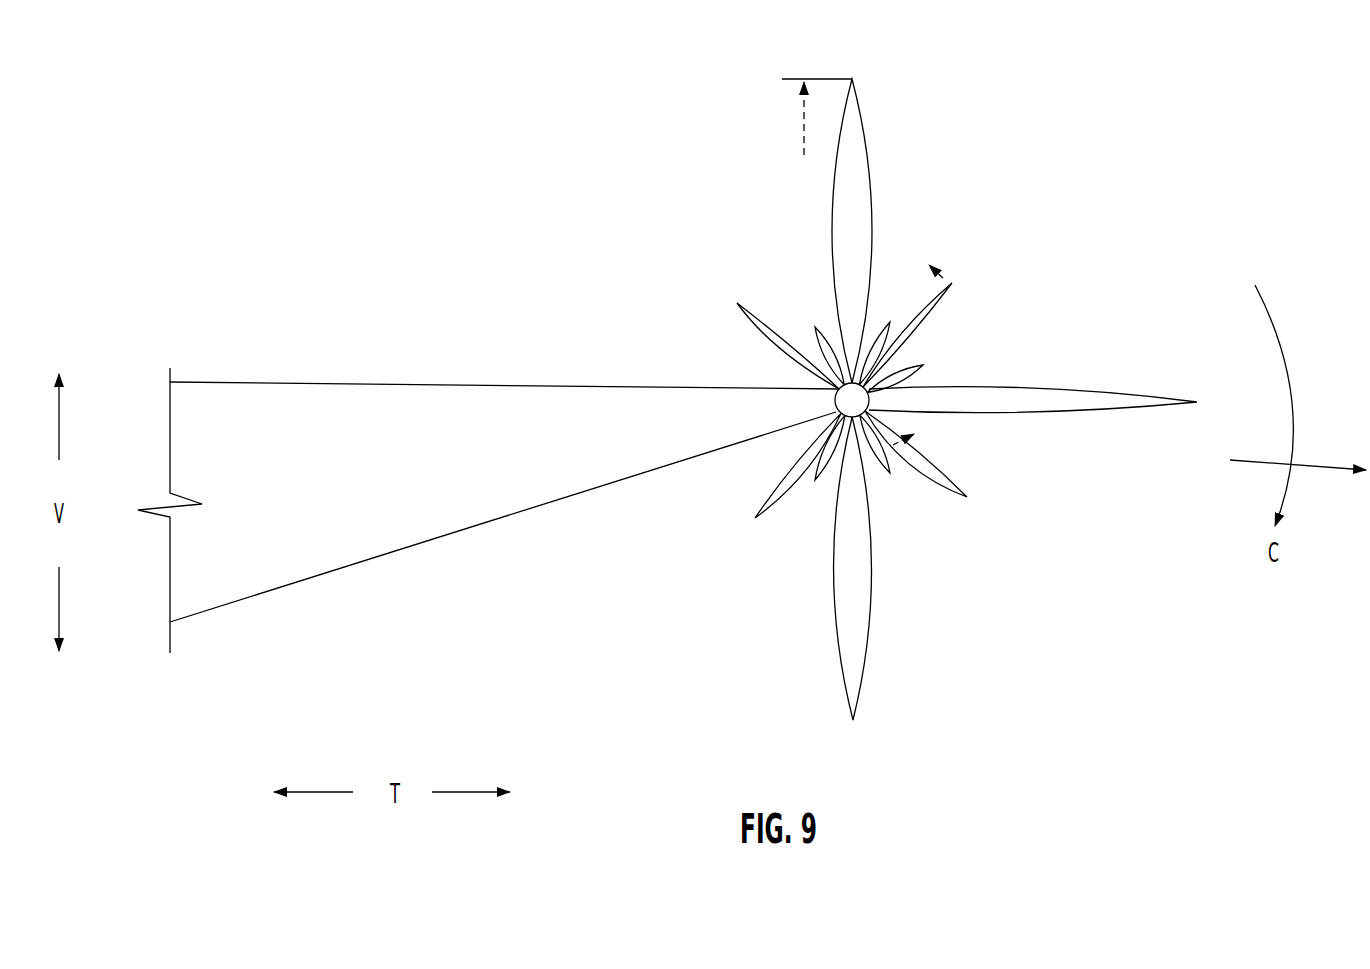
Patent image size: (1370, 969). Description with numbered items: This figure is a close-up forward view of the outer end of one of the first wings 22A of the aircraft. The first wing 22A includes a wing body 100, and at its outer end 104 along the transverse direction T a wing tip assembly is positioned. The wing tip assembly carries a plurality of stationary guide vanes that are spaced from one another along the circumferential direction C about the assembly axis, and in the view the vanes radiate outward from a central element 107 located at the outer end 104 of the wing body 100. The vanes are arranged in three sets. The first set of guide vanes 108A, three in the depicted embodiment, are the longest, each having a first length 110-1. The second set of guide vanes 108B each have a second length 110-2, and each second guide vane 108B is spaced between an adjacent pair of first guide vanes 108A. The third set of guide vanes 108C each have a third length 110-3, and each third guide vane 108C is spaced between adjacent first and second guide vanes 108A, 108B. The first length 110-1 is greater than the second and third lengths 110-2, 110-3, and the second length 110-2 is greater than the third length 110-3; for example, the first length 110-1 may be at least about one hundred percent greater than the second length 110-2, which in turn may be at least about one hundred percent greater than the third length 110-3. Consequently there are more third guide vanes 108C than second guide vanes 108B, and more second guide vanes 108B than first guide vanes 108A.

The first wing 22A is at (516, 198).
The wing body 100 is at (402, 407).
The outer end 104 is at (667, 544).
The antenna origin 107 is at (836, 408).
The first set of guide vanes 108A is at (866, 148).
The second set of guide vanes 108B is at (940, 310).
The third set of guide vanes 108C is at (925, 430).
The first length 110-1 is at (800, 120).
The second length 110-2 is at (893, 318).
The third length 110-3 is at (893, 445).